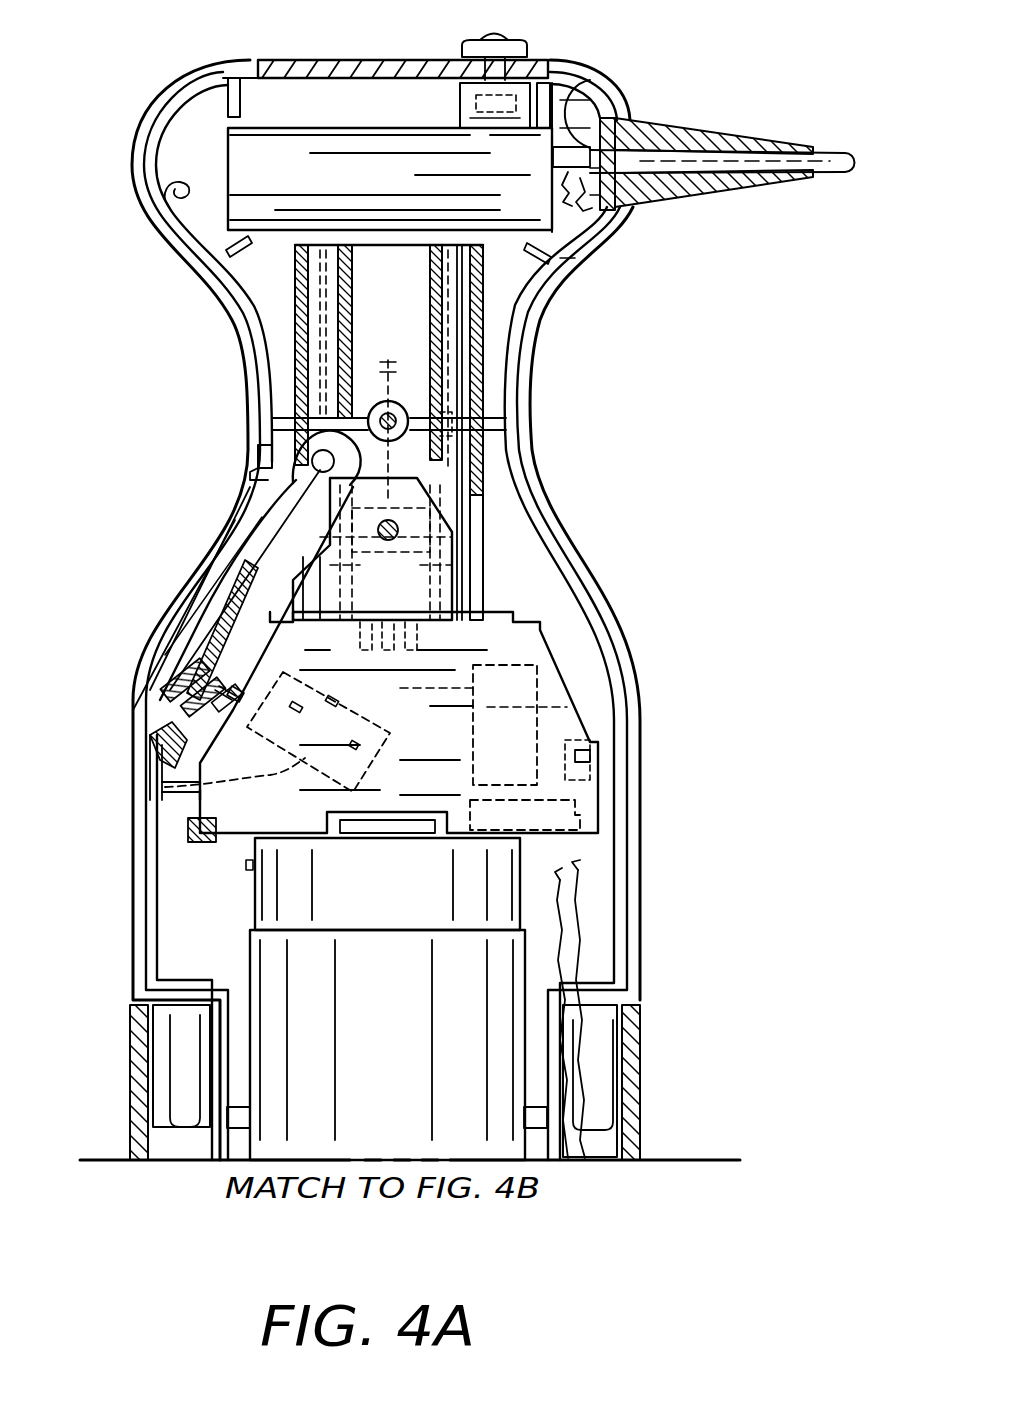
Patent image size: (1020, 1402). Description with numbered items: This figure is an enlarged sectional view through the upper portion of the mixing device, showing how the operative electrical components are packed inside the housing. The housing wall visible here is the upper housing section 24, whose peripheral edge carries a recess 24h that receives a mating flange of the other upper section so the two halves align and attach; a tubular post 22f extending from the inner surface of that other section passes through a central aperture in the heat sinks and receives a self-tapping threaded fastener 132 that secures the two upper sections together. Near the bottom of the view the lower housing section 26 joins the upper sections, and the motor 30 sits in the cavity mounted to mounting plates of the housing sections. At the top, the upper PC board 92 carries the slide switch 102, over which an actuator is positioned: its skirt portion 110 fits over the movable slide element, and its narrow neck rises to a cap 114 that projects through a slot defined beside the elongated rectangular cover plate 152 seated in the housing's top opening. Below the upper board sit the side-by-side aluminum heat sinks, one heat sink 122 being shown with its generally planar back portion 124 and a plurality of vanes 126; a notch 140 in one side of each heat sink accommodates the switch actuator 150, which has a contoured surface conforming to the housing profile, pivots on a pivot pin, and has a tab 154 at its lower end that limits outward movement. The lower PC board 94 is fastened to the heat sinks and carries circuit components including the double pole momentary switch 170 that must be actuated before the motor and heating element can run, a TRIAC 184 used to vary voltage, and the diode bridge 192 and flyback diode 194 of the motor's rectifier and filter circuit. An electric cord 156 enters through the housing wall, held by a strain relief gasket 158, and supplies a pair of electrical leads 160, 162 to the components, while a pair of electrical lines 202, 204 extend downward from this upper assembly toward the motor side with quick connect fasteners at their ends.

The upper housing section 24 is at (208, 292).
The recess 24h is at (168, 194).
The lower housing section 26 is at (642, 1088).
The motor 30 is at (405, 1070).
The upper PC board 92 is at (565, 268).
The lower PC board 94 is at (553, 667).
The slide switch 102 is at (240, 200).
The skirt portion 110 is at (460, 108).
The cap 114 is at (481, 42).
The heat sink 122 is at (484, 342).
The back portion 124 is at (390, 343).
The vanes 126 is at (348, 293).
The self-tapping threaded fastener 132 is at (408, 437).
The tubular post 22f is at (408, 405).
The notch 140 is at (287, 447).
The switch actuator 150 is at (165, 640).
The cover plate 152 is at (294, 66).
The tab 154 is at (145, 730).
The electric cord 156 is at (828, 148).
The strain relief gasket 158 is at (690, 127).
The electrical lead 160 is at (612, 213).
The electrical lead 162 is at (565, 140).
The double pole momentary switch 170 is at (150, 783).
The TRIAC 184 is at (540, 688).
The diode bridge 192 is at (592, 815).
The flyback diode 194 is at (592, 763).
The electrical line 202 is at (570, 953).
The electrical line 204 is at (580, 906).